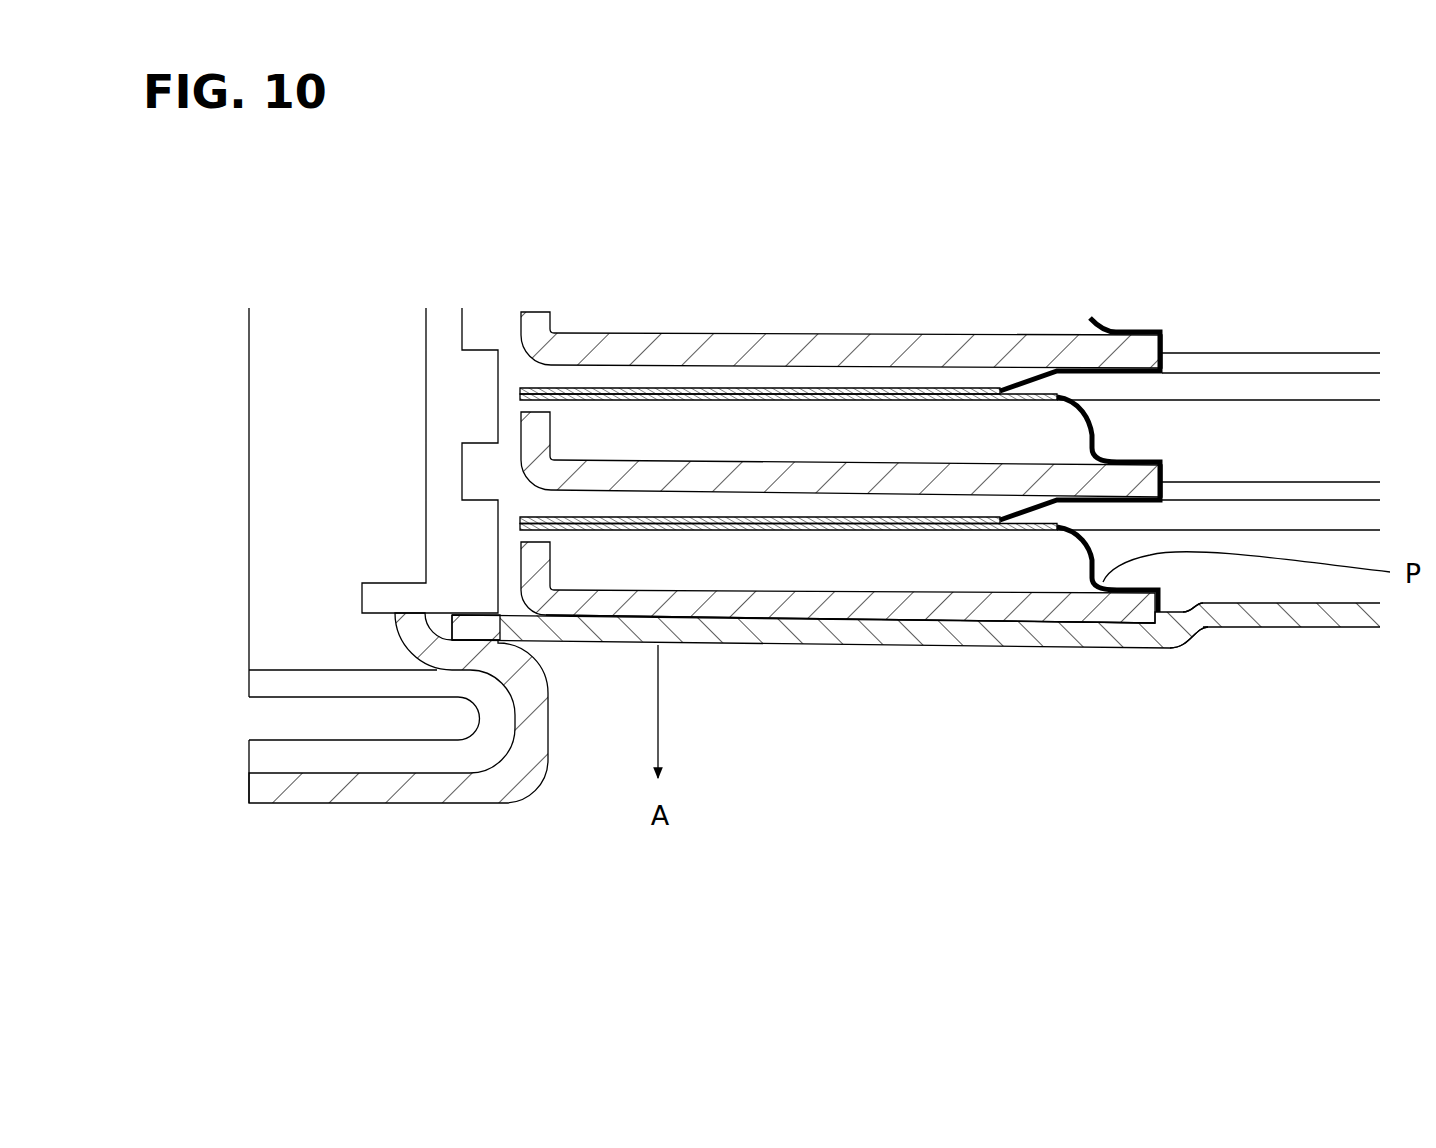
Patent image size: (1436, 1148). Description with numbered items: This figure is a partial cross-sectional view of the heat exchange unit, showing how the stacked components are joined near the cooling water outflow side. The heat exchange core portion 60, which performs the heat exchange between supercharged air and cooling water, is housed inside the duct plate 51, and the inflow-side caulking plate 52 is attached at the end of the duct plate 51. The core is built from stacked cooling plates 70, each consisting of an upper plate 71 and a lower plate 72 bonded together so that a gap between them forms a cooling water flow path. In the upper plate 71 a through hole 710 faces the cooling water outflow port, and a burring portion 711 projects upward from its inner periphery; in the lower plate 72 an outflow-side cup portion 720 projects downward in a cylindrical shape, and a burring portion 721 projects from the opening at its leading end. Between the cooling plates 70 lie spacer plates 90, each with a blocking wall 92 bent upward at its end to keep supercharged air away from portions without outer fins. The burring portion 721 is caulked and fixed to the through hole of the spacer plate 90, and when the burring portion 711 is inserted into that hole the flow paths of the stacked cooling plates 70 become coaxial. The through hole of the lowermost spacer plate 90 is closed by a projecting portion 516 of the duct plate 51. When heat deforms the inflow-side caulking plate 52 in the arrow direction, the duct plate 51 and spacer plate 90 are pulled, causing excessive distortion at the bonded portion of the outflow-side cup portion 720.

The duct plate 51 is at (880, 652).
The inflow-side caulking plate 52 is at (441, 812).
The heat exchange core portion 60 is at (652, 384).
The cooling plate 70 is at (710, 281).
The upper plate 71 is at (727, 517).
The lower plate 72 is at (782, 525).
The spacer plate 90 is at (773, 626).
The blocking wall 92 is at (521, 553).
The projecting portion 516 is at (1313, 630).
The through hole 710 is at (1035, 505).
The burring portion 711 is at (1165, 485).
The outflow-side cup portion 720 is at (1085, 567).
The burring portion 721 is at (1185, 607).